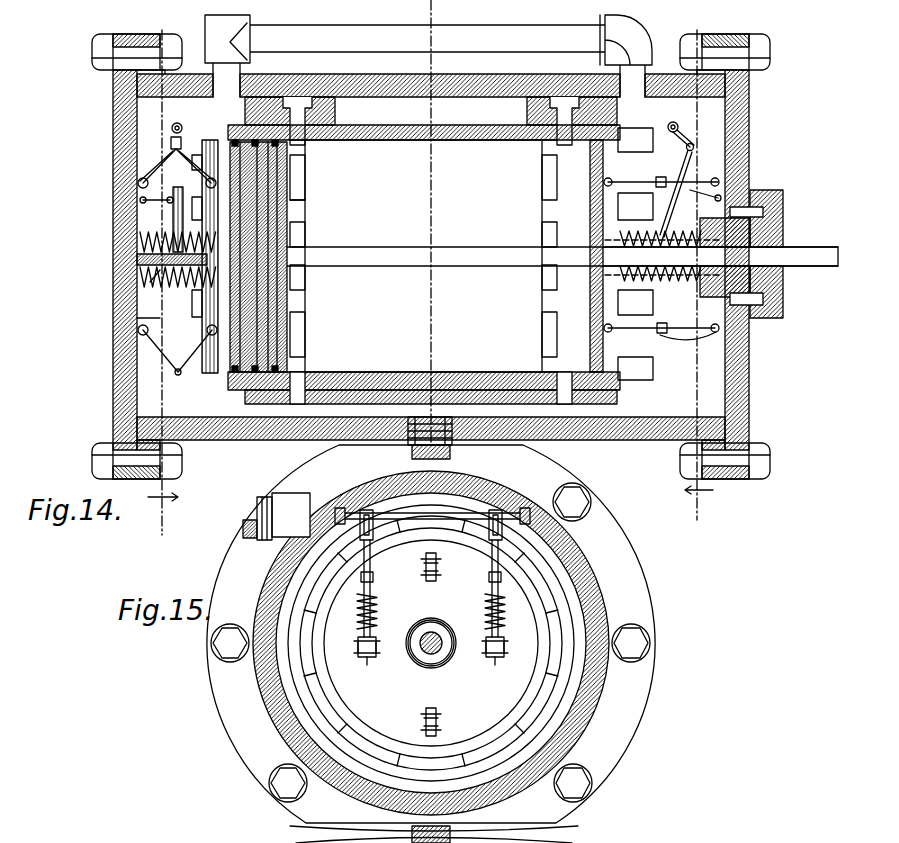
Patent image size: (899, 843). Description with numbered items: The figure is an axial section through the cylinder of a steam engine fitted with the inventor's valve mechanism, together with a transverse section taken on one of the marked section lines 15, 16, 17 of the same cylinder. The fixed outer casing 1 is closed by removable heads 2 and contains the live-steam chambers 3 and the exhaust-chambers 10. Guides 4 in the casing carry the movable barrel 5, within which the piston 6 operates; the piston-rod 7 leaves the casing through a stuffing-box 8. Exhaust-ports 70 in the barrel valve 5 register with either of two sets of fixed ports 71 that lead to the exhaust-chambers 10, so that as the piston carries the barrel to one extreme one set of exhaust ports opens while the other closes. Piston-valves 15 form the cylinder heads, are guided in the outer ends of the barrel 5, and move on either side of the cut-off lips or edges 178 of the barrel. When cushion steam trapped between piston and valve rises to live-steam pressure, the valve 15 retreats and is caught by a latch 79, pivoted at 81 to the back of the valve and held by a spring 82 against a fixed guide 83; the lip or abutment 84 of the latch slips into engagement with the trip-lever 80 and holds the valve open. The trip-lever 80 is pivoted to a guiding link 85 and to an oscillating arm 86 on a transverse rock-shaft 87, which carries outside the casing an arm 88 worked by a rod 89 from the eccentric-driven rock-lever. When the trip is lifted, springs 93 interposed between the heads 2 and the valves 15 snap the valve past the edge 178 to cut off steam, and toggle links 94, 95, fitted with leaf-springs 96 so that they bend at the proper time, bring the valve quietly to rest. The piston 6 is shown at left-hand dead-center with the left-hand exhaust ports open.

In FIG. 14, the fixed outer casing 1 is at (471, 417).
In FIG. 15, the fixed outer casing 1 is at (431, 644).
In FIG. 14, the removable heads 2 is at (136, 102).
In FIG. 14, the live-steam chambers 3 is at (112, 67).
In FIG. 14, the guides 4 is at (330, 118).
In FIG. 15, the guides 4 is at (292, 658).
In FIG. 14, the movable barrel 5 is at (403, 143).
In FIG. 15, the movable barrel 5 is at (318, 694).
In FIG. 14, the piston 6 is at (292, 208).
In FIG. 14, the piston-rod 7 is at (816, 247).
In FIG. 15, the piston-rod 7 is at (426, 654).
In FIG. 14, the stuffing-box 8 is at (762, 222).
In FIG. 14, the exhaust-chambers 10 is at (297, 104).
In FIG. 14, the piston-valves 15 is at (330, 296).
In FIG. 15, the piston-valves 15 is at (335, 720).
In FIG. 14, the section line 16- 16 is at (159, 269).
In FIG. 14, the section line 17- 17 is at (521, 191).
In FIG. 14, the exhaust-ports 70 is at (298, 172).
In FIG. 14, the fixed ports 71 is at (335, 104).
In FIG. 14, the latch 79 is at (150, 275).
In FIG. 15, the latch 79 is at (372, 658).
In FIG. 14, the trip-lever 80 is at (172, 222).
In FIG. 15, the trip-lever 80 is at (372, 567).
In FIG. 14, the latch pivot 81 is at (205, 265).
In FIG. 14, the spring 82 is at (303, 229).
In FIG. 15, the spring 82 is at (376, 612).
In FIG. 14, the fixed guide 83 is at (137, 268).
In FIG. 15, the fixed guide 83 is at (362, 658).
In FIG. 14, the lip or abutment 84 is at (137, 257).
In FIG. 14, the guiding link 85 is at (190, 205).
In FIG. 15, the guiding link 85 is at (372, 582).
In FIG. 14, the oscillating arm 86 is at (172, 128).
In FIG. 15, the oscillating arm 86 is at (290, 540).
In FIG. 14, the transverse rock-shaft 87 is at (180, 128).
In FIG. 15, the transverse rock-shaft 87 is at (497, 510).
In FIG. 15, the arm 88 is at (258, 520).
In FIG. 15, the rod 89 is at (243, 530).
In FIG. 14, the springs 93 is at (136, 319).
In FIG. 15, the springs 93 is at (448, 632).
In FIG. 14, the link 94 is at (138, 181).
In FIG. 14, the link 95 is at (150, 170).
In FIG. 15, the link 95 is at (436, 584).
In FIG. 14, the leaf-springs 96 is at (176, 150).
In FIG. 14, the cut-off lips or edges 178 is at (252, 140).